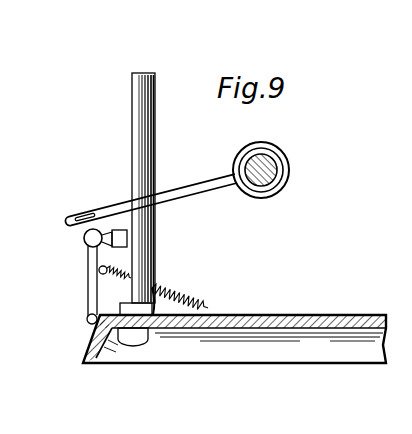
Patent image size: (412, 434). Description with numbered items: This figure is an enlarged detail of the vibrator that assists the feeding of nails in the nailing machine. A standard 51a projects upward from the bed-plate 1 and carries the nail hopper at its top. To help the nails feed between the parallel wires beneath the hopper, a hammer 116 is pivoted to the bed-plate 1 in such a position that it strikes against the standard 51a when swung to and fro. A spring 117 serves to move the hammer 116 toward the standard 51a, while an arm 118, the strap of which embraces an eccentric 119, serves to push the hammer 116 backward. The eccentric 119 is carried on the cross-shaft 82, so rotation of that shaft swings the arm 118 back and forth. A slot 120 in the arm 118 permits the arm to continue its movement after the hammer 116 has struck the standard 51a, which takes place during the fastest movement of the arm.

The base plate 1 is at (255, 310).
The standard 51a is at (134, 164).
The cross-shaft 82 is at (252, 182).
The hammer 116 is at (88, 247).
The spring 117 is at (174, 300).
The arm 118 is at (176, 189).
The eccentric 119 is at (283, 172).
The slot 120 is at (88, 213).